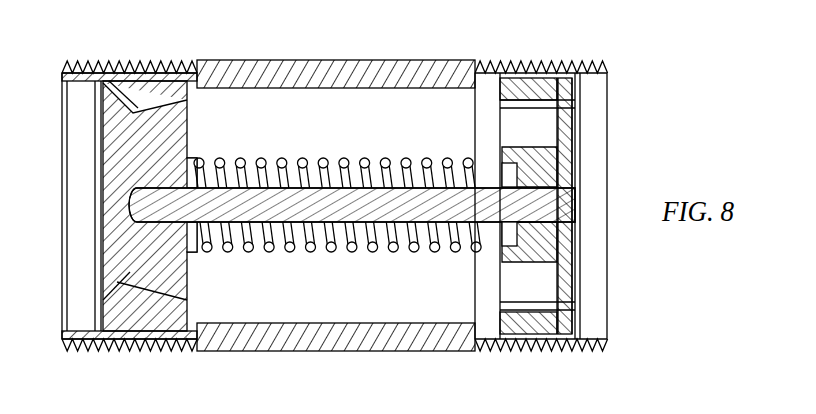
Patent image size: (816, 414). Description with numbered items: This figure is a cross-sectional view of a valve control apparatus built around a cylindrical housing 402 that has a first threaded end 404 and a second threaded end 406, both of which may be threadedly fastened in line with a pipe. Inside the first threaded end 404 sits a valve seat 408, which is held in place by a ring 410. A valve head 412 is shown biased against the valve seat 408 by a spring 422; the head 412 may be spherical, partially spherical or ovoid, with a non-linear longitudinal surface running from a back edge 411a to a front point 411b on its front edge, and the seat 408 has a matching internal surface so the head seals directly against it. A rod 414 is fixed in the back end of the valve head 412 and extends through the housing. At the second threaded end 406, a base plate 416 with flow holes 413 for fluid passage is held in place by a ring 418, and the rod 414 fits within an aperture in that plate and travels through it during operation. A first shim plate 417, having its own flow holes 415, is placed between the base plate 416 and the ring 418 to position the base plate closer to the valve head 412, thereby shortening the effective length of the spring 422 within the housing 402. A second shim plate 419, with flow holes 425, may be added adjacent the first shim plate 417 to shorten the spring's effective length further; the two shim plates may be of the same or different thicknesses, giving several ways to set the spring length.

The cylindrical housing 402 is at (292, 77).
The first threaded end 404 is at (95, 65).
The second threaded end 406 is at (513, 78).
The valve seat 408 is at (127, 110).
The ring 410 is at (95, 104).
The back edge 411a is at (185, 296).
The front point 411b is at (97, 205).
The valve head 412 is at (148, 147).
The flow holes 413 is at (535, 125).
The rod 414 is at (405, 205).
The flow holes 415 is at (560, 122).
The base plate 416 is at (540, 322).
The first shim plate 417 is at (563, 320).
The ring 418 is at (580, 177).
The second shim plate 419 is at (560, 282).
The spring 422 is at (342, 158).
The flow holes 425 is at (565, 138).